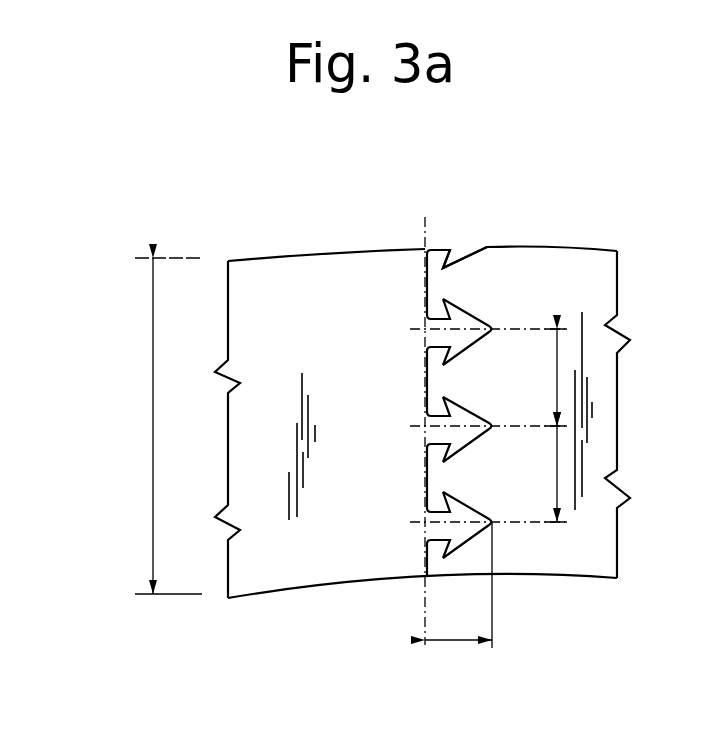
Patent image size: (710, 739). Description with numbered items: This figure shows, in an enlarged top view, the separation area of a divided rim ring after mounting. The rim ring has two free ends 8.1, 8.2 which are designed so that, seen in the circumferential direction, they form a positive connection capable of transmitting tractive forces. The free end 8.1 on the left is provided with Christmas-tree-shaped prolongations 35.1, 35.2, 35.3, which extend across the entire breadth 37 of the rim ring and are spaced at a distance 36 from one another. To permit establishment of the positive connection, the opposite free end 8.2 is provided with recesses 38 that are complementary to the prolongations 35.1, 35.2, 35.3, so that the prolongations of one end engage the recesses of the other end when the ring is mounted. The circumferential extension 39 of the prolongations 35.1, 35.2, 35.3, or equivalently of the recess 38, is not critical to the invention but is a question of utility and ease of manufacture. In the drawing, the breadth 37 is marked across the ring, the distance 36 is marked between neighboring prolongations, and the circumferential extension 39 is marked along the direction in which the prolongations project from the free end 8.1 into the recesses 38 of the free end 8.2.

The free end 8.1 is at (303, 277).
The free end 8.2 is at (563, 262).
The recesses 38 is at (462, 259).
The prolongation 35.1 is at (462, 532).
The prolongation 35.2 is at (455, 412).
The prolongation 35.3 is at (473, 327).
The distance 36 is at (558, 470).
The breadth 37 is at (152, 418).
The circumferential extension 39 is at (458, 640).